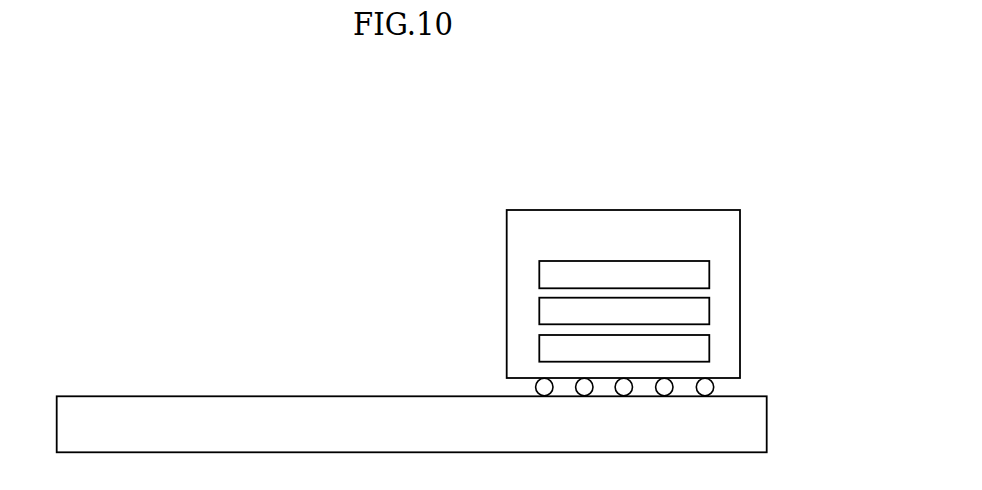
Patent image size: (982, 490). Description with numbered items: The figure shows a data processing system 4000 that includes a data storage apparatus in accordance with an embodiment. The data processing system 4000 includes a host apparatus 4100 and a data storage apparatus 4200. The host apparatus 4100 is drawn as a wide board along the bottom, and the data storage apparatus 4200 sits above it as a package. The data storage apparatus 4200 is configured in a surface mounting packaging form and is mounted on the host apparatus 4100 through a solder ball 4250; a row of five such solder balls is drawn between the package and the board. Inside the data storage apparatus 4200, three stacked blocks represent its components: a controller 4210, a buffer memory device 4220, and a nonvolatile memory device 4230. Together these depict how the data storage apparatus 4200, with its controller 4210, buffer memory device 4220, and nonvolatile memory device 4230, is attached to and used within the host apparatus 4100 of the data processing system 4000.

The data processing system 4000 is at (117, 152).
The host apparatus 4100 is at (412, 424).
The data storage apparatus 4200 is at (623, 294).
The controller 4210 is at (624, 275).
The buffer memory device 4220 is at (624, 311).
The nonvolatile memory device 4230 is at (624, 348).
The solder ball 4250 is at (723, 386).